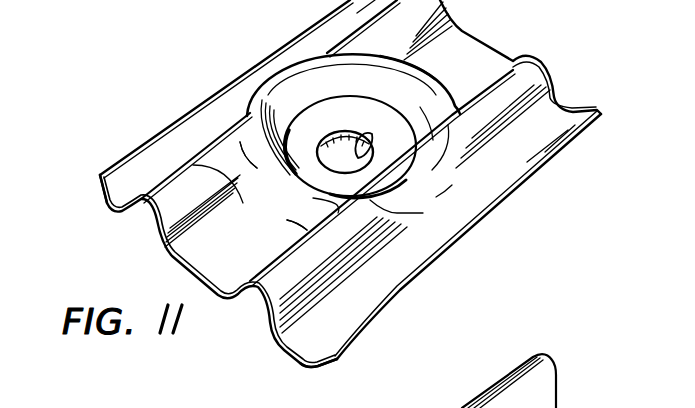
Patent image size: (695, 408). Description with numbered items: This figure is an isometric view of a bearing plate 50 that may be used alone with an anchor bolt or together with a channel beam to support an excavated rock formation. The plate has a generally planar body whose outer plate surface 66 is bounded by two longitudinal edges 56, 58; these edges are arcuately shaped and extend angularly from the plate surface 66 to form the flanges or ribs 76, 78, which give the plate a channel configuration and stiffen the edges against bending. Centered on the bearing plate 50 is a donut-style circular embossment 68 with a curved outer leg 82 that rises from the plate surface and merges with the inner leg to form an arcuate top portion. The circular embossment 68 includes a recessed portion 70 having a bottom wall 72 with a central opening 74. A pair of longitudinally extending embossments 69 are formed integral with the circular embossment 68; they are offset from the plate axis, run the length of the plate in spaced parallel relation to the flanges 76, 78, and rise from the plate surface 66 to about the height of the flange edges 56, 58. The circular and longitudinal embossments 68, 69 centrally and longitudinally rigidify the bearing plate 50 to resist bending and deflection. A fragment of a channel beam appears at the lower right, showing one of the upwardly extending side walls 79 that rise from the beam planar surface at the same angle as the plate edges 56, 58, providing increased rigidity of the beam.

The bearing plate 50 is at (267, 44).
The longitudinal edge 56 is at (143, 143).
The longitudinal edge 58 is at (423, 276).
The plate surface 66 is at (224, 267).
The circular embossment 68 is at (410, 68).
The longitudinal embossments 69 is at (518, 75).
The recessed portion 70 is at (290, 128).
The bottom wall 72 is at (352, 120).
The central opening 74 is at (363, 138).
The rib 76 is at (98, 192).
The rib 78 is at (327, 367).
The side walls 79 is at (540, 392).
The curved outer leg 82 is at (242, 153).